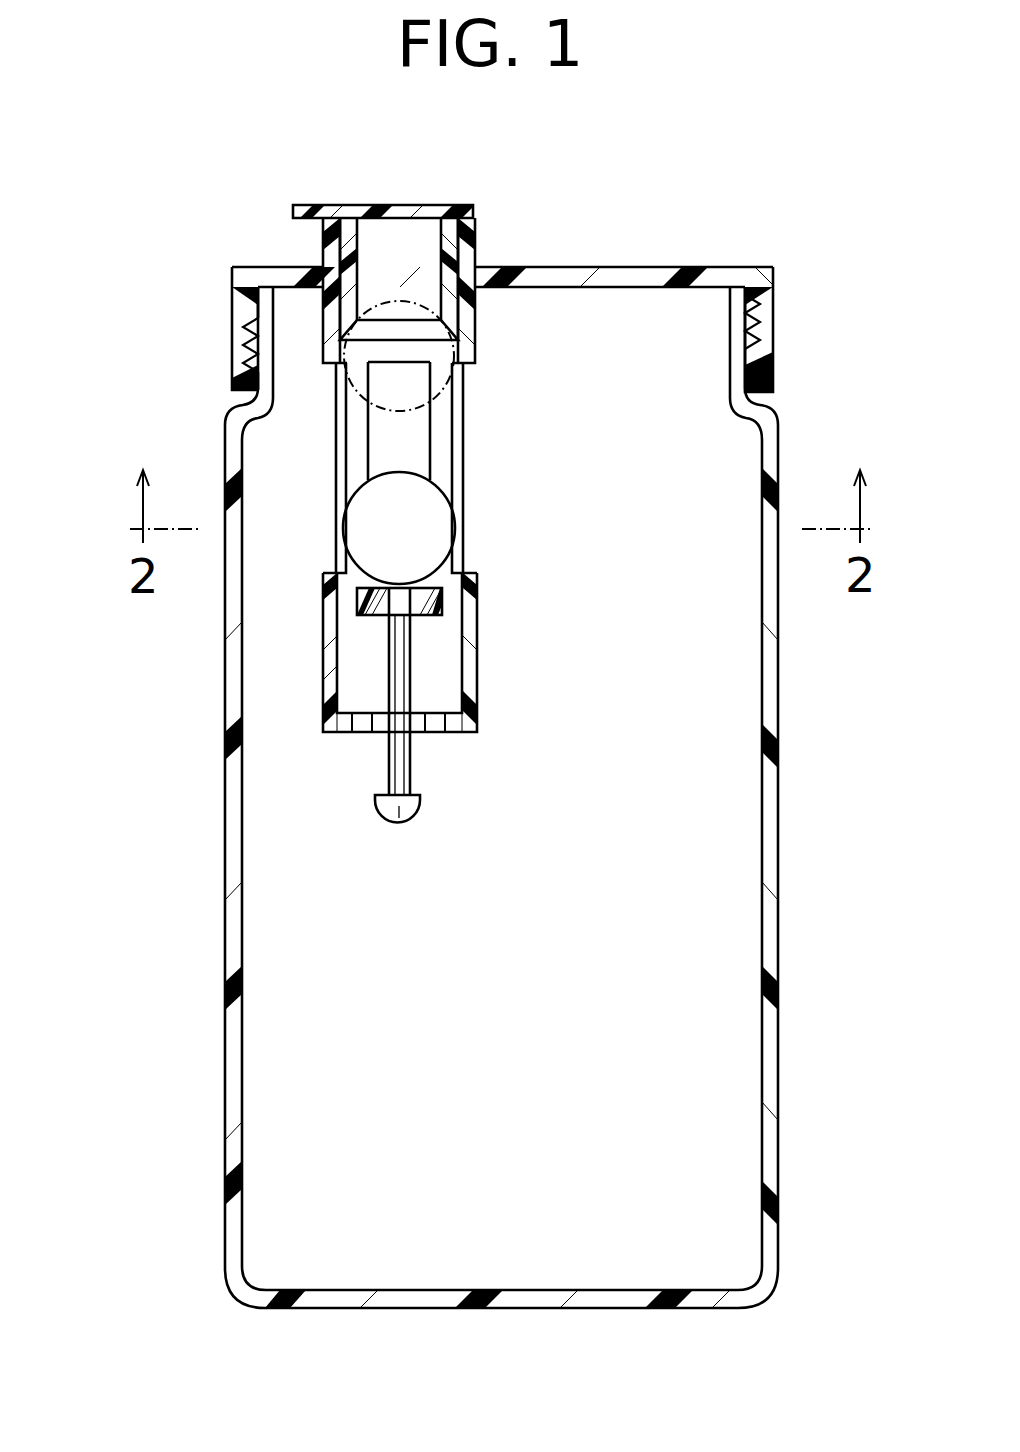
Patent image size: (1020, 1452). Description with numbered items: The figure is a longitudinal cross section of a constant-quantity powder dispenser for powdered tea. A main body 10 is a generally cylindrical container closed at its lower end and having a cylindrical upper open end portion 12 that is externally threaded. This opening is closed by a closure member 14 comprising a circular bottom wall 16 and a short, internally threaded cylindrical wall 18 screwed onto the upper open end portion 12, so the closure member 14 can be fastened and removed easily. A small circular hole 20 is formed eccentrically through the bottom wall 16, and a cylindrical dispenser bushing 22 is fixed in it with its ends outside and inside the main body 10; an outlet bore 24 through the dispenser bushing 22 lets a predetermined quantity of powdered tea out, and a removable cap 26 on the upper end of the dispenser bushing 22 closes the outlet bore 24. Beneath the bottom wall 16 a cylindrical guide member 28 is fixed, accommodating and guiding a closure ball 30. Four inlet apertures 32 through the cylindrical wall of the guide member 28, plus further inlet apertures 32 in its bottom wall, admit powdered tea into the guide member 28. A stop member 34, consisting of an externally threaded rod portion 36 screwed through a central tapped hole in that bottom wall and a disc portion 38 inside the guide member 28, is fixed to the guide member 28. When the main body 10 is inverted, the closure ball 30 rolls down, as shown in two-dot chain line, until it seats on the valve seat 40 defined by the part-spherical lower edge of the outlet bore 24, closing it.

The main body 10 is at (812, 826).
The upper open end portion 12 is at (745, 312).
The closure member 14 is at (566, 304).
The bottom wall 16 is at (547, 275).
The cylindrical wall 18 is at (767, 333).
The circular hole 20 is at (380, 276).
The dispenser bushing 22 is at (453, 258).
The outlet bore 24 is at (438, 232).
The cap 26 is at (363, 207).
The guide member 28 is at (339, 596).
The closure ball 30 is at (427, 530).
The inlet apertures 32 is at (383, 428).
The stop member 34 is at (258, 705).
The rod portion 36 is at (398, 685).
The disc portion 38 is at (362, 605).
The valve seat 40 is at (440, 347).